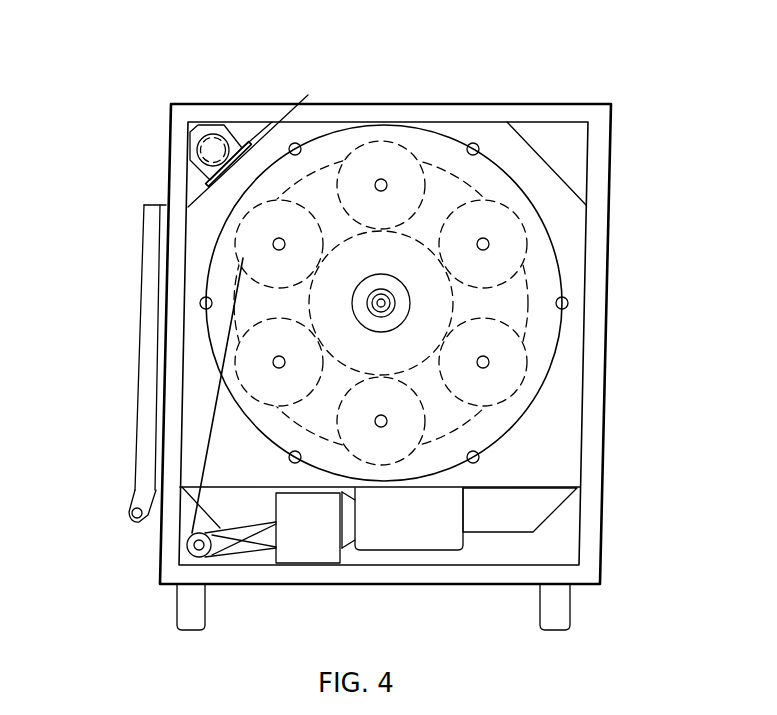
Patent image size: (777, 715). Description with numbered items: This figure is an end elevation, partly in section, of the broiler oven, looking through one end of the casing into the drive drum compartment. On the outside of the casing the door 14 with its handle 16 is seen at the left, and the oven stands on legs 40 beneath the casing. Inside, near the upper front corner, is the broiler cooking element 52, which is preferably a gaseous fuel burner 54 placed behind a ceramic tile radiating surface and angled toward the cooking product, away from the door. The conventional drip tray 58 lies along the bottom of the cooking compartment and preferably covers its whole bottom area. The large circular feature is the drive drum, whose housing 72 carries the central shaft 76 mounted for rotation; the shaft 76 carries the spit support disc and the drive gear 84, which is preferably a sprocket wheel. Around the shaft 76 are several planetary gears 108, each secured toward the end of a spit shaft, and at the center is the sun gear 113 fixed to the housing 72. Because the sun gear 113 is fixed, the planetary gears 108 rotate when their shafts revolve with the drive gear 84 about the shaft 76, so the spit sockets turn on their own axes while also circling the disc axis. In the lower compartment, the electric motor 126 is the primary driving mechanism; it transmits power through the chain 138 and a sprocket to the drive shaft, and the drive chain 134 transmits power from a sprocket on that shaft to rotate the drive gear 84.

The door 14 is at (152, 338).
The handle 16 is at (129, 513).
The legs 40 is at (190, 606).
The broiler cooking element 52 is at (233, 128).
The gaseous fuel burner 54 is at (210, 125).
The drip tray 58 is at (550, 515).
The housing 72 is at (510, 180).
The shaft 76 is at (383, 303).
The drive gear 84 is at (435, 418).
The planetary gear 108 is at (507, 238).
The sun gear 113 is at (403, 257).
The electric motor 126 is at (410, 537).
The drive chain 134 is at (200, 527).
The chain 138 is at (240, 553).